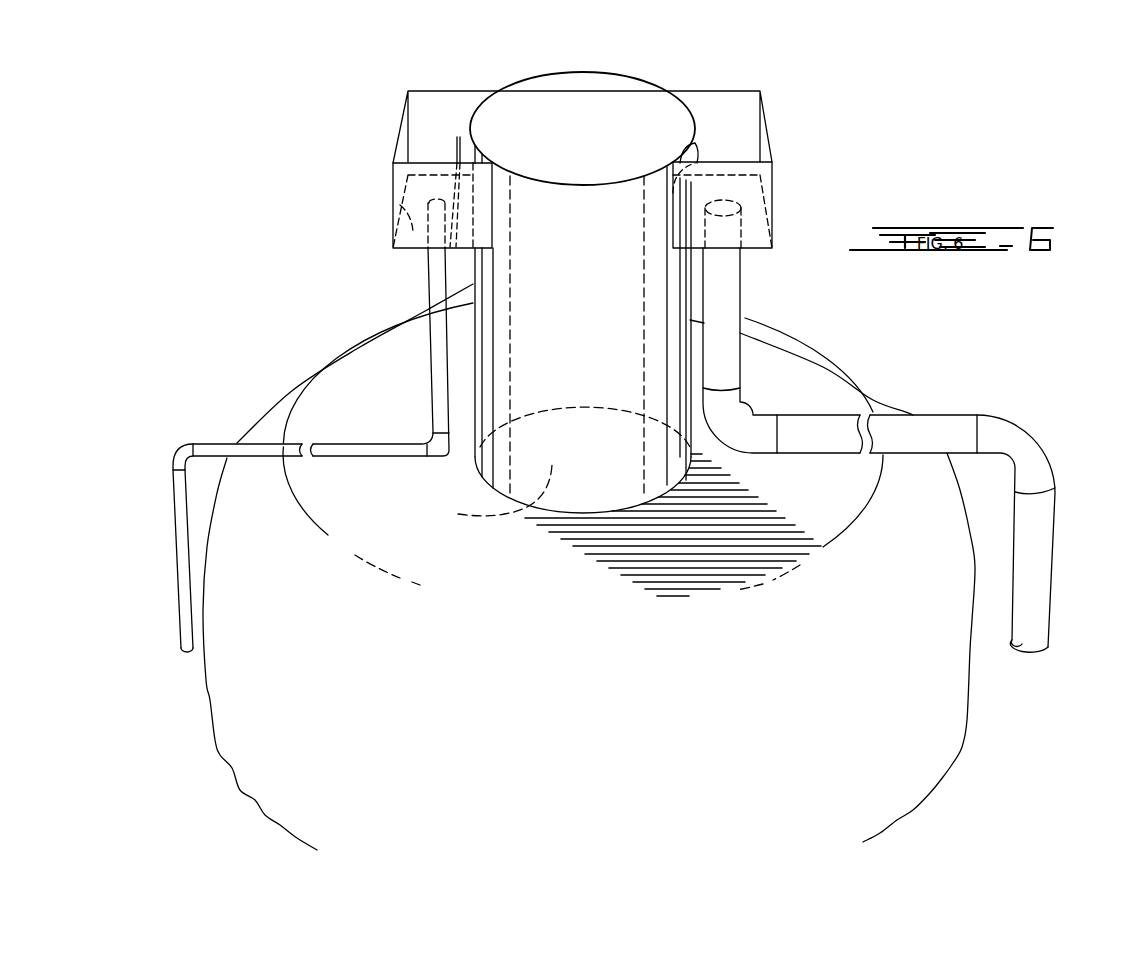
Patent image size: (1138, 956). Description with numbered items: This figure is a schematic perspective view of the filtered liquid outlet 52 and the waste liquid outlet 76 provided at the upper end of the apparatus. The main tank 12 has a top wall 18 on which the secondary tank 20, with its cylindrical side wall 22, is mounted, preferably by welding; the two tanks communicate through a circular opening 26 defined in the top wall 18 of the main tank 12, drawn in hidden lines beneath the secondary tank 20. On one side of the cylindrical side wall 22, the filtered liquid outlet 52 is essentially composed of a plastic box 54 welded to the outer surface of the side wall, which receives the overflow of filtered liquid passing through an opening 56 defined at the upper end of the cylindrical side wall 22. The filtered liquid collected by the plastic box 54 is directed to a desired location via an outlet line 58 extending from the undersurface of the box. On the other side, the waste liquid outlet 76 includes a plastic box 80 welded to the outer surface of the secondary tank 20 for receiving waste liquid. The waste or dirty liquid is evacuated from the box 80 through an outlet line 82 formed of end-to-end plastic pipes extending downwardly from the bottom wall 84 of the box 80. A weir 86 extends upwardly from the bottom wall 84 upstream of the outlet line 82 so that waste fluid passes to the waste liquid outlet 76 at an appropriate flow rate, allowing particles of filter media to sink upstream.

The main tank 12 is at (975, 564).
The top wall 18 is at (785, 377).
The secondary tank 20 is at (640, 77).
The cylindrical side wall 22 is at (473, 297).
The circular opening 26 is at (485, 496).
The filtered liquid outlet 52 is at (744, 93).
The plastic box 54 is at (712, 92).
The opening 56 is at (695, 148).
The outlet line 58 is at (733, 306).
The waste liquid outlet 76 is at (466, 89).
The plastic box 80 is at (403, 110).
The outlet line 82 is at (437, 288).
The bottom wall 84 is at (400, 205).
The weir 86 is at (457, 137).